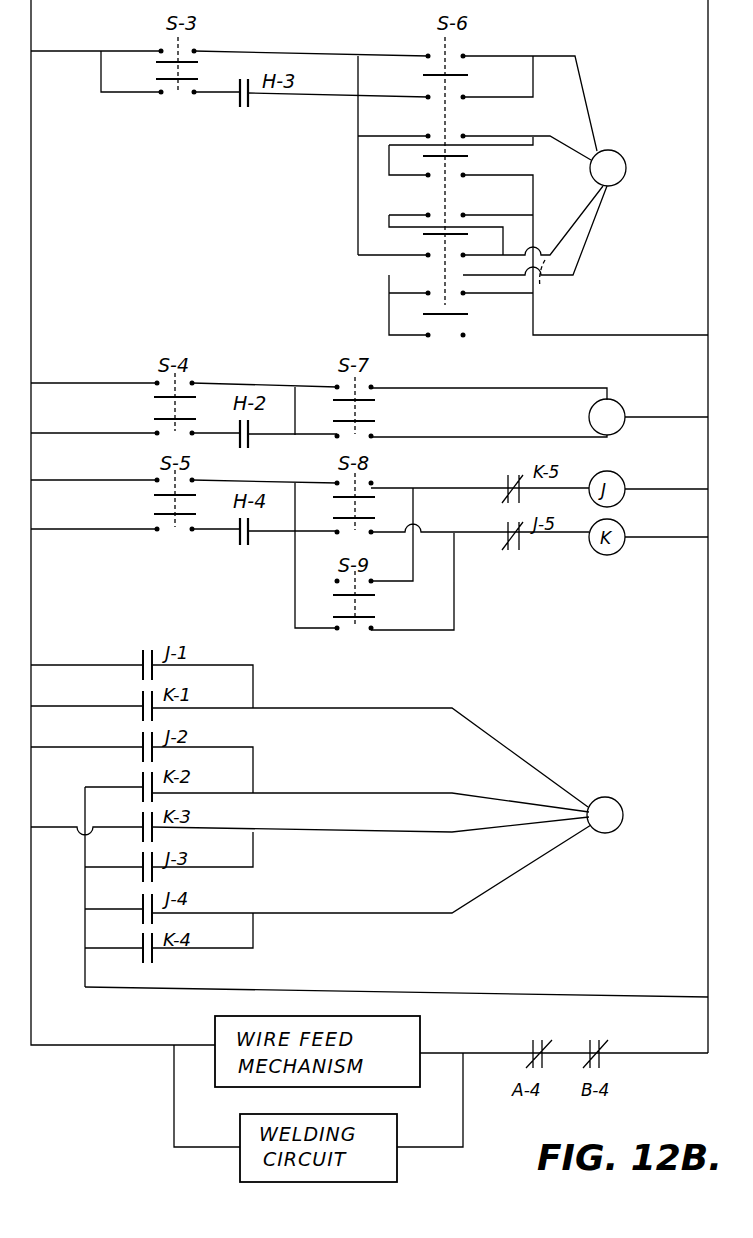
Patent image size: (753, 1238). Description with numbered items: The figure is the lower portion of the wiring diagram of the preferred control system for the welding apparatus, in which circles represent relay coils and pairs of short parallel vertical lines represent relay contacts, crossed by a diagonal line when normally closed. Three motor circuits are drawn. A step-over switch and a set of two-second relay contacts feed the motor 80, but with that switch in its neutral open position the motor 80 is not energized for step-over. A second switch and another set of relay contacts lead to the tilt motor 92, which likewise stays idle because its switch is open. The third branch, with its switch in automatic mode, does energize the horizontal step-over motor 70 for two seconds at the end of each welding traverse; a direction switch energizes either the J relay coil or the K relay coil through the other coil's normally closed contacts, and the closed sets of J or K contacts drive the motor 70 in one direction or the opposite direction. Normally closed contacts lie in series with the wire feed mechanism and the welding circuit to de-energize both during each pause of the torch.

The motor 80 is at (626, 180).
The tilt motor 92 is at (623, 403).
The motor 70 is at (621, 802).